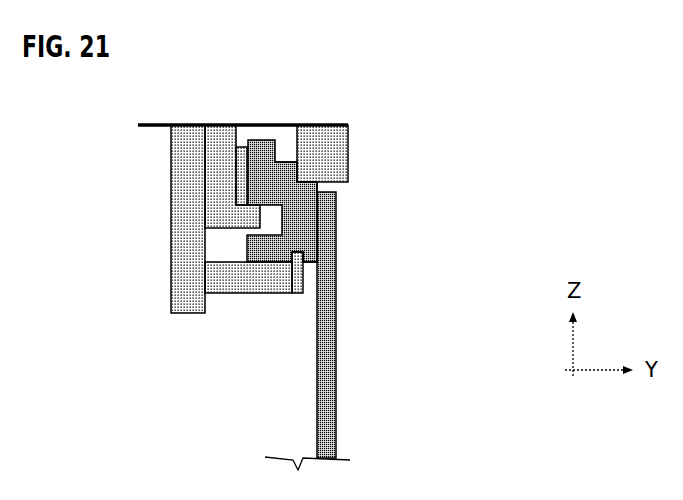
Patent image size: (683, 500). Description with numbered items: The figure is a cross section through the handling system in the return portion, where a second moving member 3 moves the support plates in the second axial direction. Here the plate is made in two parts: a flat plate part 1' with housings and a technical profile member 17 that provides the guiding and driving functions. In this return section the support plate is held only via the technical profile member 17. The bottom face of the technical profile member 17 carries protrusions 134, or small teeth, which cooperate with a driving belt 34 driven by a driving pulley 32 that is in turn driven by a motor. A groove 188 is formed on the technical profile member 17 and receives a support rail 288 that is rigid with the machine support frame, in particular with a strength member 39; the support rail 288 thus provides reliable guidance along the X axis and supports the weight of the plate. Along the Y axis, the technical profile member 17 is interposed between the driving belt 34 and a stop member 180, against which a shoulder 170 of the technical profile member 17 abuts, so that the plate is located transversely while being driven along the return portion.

The second moving member 3 is at (262, 230).
The technical profile member 17 is at (284, 148).
The driving pulley 32 is at (227, 187).
The driving belt 34 is at (241, 146).
The strength member 39 is at (185, 313).
The protrusions 134 is at (252, 172).
The shoulder 170 is at (298, 179).
The stop member 180 is at (333, 157).
The groove 188 is at (298, 250).
The support rail 288 is at (297, 283).
The flat plate part 1' is at (336, 331).